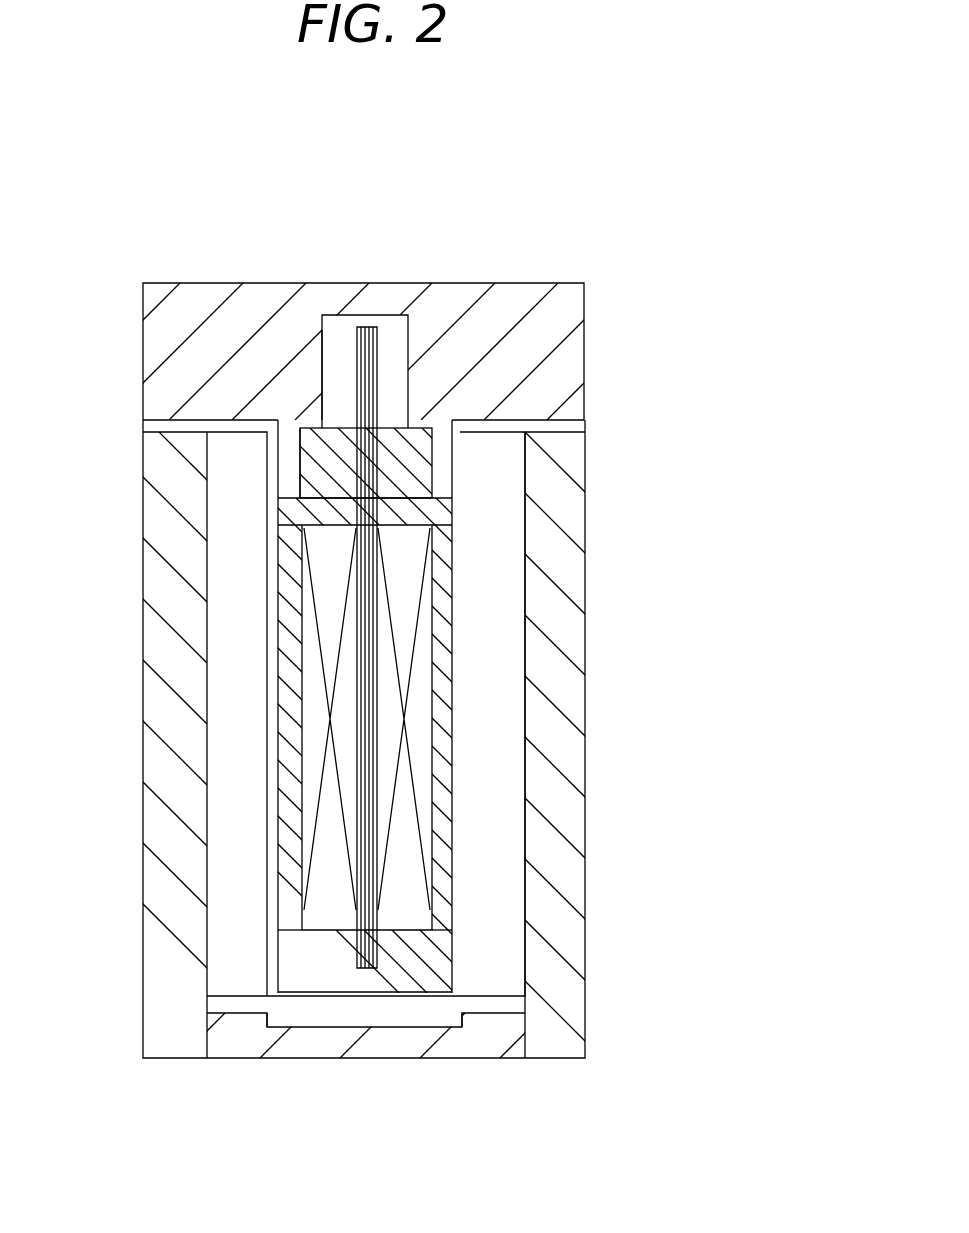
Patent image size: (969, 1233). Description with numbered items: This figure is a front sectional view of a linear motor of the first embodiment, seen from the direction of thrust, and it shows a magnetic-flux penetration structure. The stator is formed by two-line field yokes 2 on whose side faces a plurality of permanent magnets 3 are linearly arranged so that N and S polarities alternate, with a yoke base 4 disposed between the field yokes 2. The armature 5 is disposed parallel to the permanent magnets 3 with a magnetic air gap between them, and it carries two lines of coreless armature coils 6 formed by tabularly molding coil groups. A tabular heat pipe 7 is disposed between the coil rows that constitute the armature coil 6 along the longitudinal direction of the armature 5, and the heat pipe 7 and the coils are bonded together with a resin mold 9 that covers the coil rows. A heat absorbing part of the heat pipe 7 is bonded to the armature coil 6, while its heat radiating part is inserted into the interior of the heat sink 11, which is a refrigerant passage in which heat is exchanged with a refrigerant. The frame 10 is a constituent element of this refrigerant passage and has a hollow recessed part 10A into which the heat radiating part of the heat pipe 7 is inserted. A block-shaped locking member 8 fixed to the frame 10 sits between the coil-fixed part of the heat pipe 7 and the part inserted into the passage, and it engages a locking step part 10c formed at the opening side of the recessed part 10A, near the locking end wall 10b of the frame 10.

The field yoke 2 is at (567, 745).
The permanent magnet 3 is at (495, 855).
The yoke base 4 is at (473, 1050).
The armature 5 is at (330, 1017).
The armature coil 6 is at (400, 552).
The heat pipe 7 is at (377, 617).
The locking member 8 is at (400, 463).
The resin mold 9 is at (427, 950).
The frame 10 is at (513, 355).
The recessed part 10A is at (407, 380).
The locking end wall 10b is at (279, 514).
The locking step part 10c is at (300, 462).
The heat sink 11 is at (340, 362).